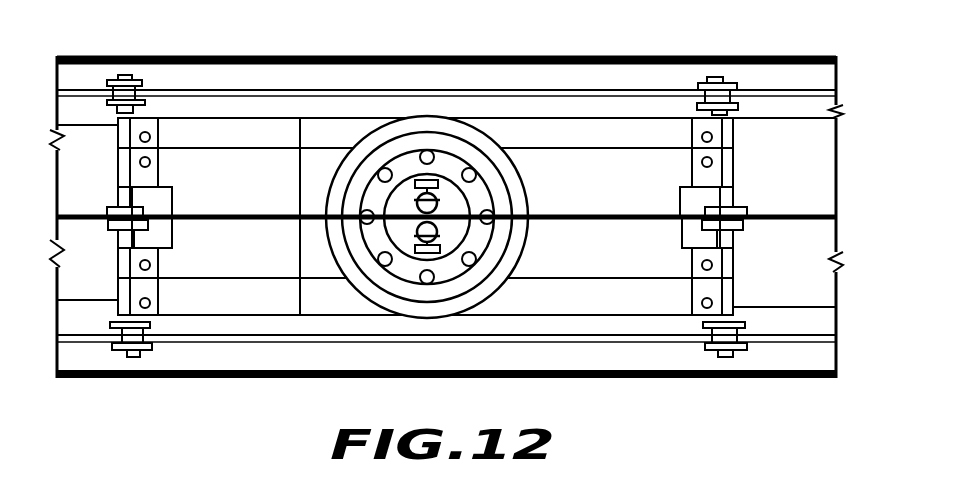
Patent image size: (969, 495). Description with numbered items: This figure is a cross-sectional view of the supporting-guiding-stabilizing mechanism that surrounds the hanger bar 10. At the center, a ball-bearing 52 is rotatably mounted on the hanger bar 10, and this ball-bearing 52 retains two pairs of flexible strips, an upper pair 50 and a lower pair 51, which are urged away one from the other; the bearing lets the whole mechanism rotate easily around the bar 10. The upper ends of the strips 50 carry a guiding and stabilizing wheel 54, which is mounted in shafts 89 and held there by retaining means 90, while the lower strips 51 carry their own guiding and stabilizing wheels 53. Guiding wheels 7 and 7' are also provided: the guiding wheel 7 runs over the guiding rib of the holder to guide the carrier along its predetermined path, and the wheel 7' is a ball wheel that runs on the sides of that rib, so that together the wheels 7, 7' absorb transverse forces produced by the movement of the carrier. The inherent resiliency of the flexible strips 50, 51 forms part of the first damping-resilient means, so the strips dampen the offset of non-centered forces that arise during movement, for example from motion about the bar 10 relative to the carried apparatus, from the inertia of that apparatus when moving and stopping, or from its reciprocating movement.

The guiding wheel 7 is at (462, 217).
The guiding wheel 7' is at (483, 155).
The hanger bar 10 is at (460, 238).
The upper pair of flexible strips 50 is at (272, 209).
The lower pair of flexible strips 51 is at (240, 147).
The ball-bearing 52 is at (495, 278).
The guiding and stabilizing wheels 53 is at (150, 88).
The guiding and stabilizing wheel 54 is at (150, 203).
The shafts 89 is at (738, 113).
The retaining means 90 is at (735, 247).